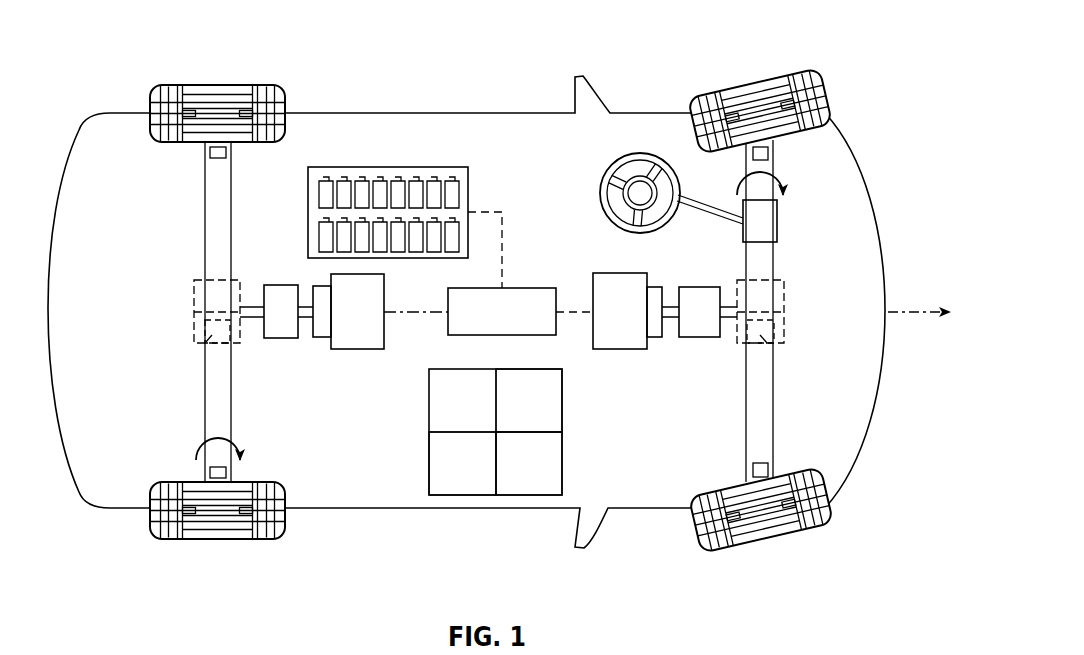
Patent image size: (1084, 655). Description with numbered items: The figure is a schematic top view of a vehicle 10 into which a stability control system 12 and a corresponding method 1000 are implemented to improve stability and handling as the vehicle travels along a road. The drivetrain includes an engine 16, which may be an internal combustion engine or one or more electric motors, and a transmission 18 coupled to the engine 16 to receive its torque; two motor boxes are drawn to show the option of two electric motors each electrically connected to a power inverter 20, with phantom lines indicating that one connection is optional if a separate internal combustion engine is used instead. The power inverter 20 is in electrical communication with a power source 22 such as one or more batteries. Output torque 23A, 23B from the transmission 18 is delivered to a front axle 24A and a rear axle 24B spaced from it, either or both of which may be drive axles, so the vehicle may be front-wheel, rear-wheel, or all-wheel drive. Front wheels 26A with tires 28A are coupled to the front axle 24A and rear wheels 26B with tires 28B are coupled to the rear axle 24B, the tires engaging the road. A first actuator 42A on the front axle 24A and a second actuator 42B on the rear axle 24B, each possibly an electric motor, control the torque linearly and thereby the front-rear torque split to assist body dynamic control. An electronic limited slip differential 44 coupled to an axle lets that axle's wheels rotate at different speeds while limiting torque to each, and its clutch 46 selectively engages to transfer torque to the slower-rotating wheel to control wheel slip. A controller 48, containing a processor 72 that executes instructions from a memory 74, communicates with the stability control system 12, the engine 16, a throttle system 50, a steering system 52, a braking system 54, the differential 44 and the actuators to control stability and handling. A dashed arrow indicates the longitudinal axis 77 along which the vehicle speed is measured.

The vehicle 10 is at (836, 41).
The stability control system 12 is at (444, 521).
The engine 16 is at (386, 293).
The transmission 18 is at (270, 285).
The power inverter 20 is at (515, 288).
The power source 22 is at (420, 167).
The torque 23A is at (784, 172).
The torque 23B is at (198, 440).
The front axle 24A is at (780, 430).
The rear axle 24B is at (197, 232).
The front wheels 26A is at (818, 536).
The rear wheels 26B is at (163, 561).
The front tires 28A is at (768, 74).
The rear tires 28B is at (215, 85).
The first actuator 42A is at (786, 295).
The second actuator 42B is at (190, 283).
The electronic limited slip differential 44 is at (190, 318).
The clutch 46 is at (205, 348).
The controller 48 is at (480, 416).
The throttle system 50 is at (674, 350).
The steering system 52 is at (596, 174).
The braking system 54 is at (265, 443).
The processor 72 is at (449, 475).
The memory 74 is at (514, 475).
The longitudinal axis 77 is at (910, 312).
The method 1000 is at (503, 413).